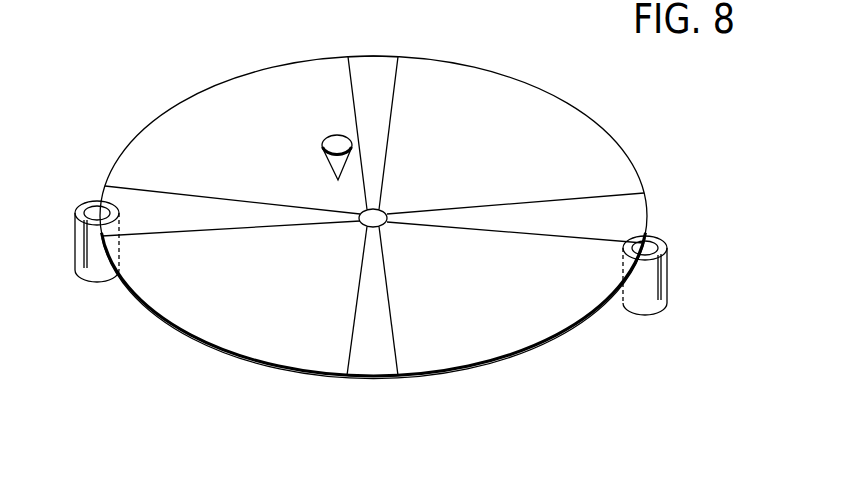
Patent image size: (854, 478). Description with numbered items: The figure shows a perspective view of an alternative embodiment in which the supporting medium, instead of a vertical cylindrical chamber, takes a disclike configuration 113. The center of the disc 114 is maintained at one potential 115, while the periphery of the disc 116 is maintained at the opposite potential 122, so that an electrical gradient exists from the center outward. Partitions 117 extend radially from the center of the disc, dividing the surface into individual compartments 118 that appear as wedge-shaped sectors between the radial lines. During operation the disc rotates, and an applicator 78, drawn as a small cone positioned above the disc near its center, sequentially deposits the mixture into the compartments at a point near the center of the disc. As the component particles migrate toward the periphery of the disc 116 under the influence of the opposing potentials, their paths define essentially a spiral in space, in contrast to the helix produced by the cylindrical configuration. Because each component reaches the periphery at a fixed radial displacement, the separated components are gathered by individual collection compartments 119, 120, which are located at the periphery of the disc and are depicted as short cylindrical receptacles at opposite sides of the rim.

The applicator 78 is at (333, 143).
The disclike configuration 113 is at (502, 65).
The center of the disc 114 is at (385, 228).
The one potential 115 is at (415, 185).
The periphery of the disc 116 is at (222, 353).
The partitions 117 is at (352, 83).
The individual compartments 118 is at (377, 73).
The collection compartment 119 is at (665, 303).
The collection compartment 120 is at (80, 267).
The opposite potential 122 is at (272, 405).